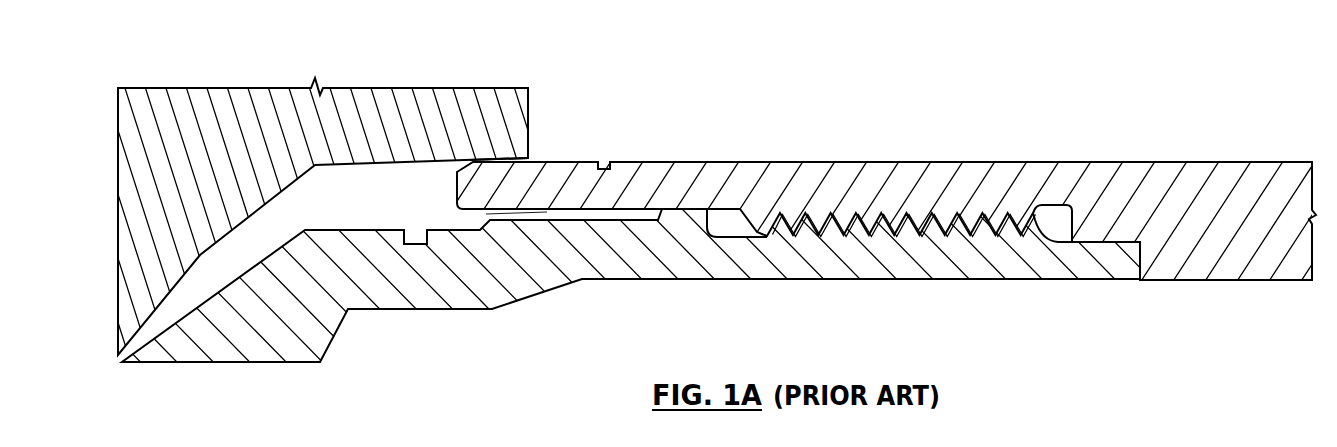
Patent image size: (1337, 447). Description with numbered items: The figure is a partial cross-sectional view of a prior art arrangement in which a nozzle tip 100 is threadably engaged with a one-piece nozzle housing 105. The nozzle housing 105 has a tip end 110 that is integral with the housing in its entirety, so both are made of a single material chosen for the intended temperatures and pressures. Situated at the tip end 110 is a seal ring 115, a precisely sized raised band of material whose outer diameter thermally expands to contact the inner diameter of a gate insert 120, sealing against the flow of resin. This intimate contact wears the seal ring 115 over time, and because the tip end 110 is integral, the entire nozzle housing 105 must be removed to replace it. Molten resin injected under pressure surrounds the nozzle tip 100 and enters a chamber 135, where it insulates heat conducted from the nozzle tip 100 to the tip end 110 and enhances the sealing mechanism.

The nozzle tip 100 is at (542, 273).
The nozzle housing 105 is at (1163, 177).
The tip end 110 is at (871, 173).
The seal ring 115 is at (495, 152).
The gate insert 120 is at (191, 110).
The chamber 135 is at (488, 214).